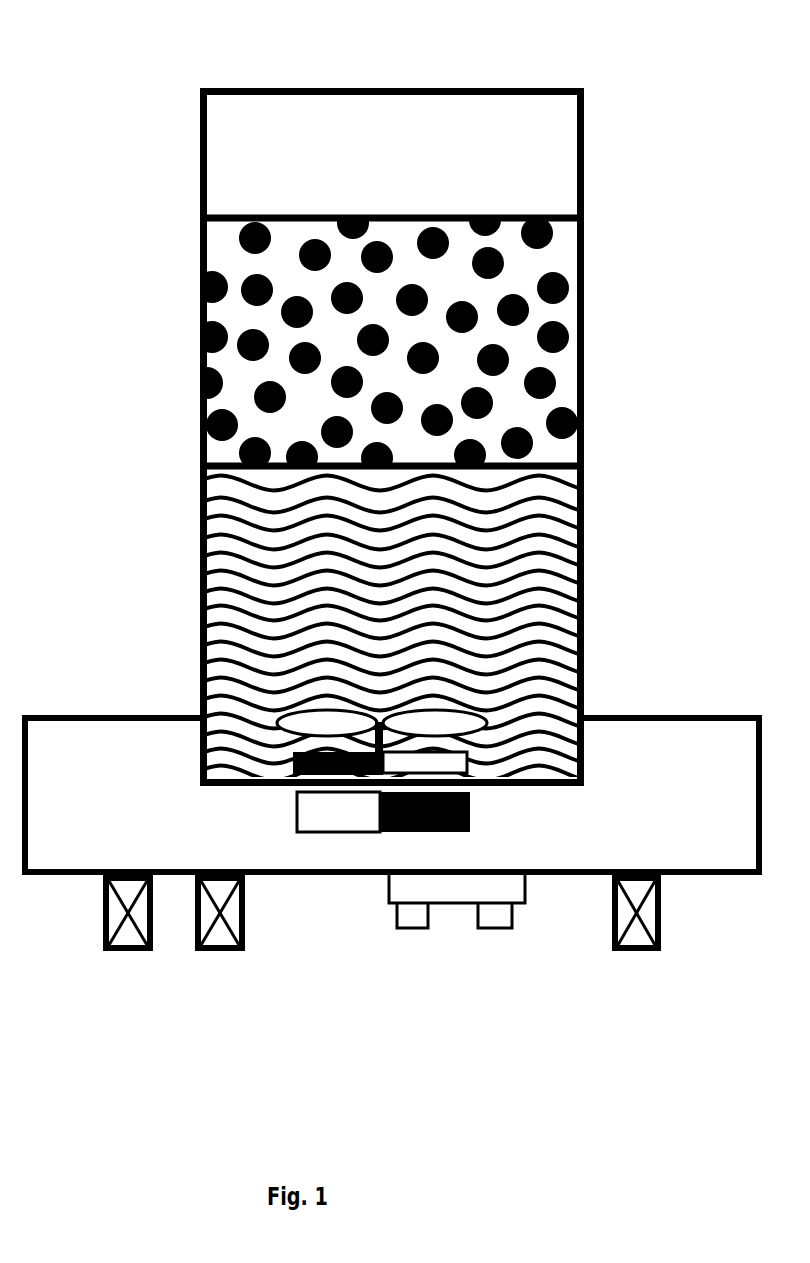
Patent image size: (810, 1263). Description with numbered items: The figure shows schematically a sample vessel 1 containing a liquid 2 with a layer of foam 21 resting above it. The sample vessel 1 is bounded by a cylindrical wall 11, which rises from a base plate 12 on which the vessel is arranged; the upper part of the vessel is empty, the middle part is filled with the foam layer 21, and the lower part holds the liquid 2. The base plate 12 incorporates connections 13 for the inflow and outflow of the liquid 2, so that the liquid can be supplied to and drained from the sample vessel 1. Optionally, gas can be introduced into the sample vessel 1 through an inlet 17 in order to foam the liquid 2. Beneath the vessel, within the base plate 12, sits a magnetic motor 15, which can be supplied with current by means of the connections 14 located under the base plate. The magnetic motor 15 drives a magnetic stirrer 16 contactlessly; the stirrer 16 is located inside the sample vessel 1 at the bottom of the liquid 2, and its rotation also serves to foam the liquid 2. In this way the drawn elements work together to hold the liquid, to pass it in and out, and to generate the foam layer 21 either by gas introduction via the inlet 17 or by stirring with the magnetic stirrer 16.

The sample vessel 1 is at (608, 113).
The cylindrical wall 11 is at (202, 172).
The layer of foam 21 is at (560, 363).
The liquid 2 is at (538, 622).
The magnetic stirrer 16 is at (435, 725).
The base plate 12 is at (128, 745).
The connections 13 is at (174, 985).
The connections 14 is at (452, 892).
The magnetic motor 15 is at (340, 818).
The inlet 17 is at (635, 950).